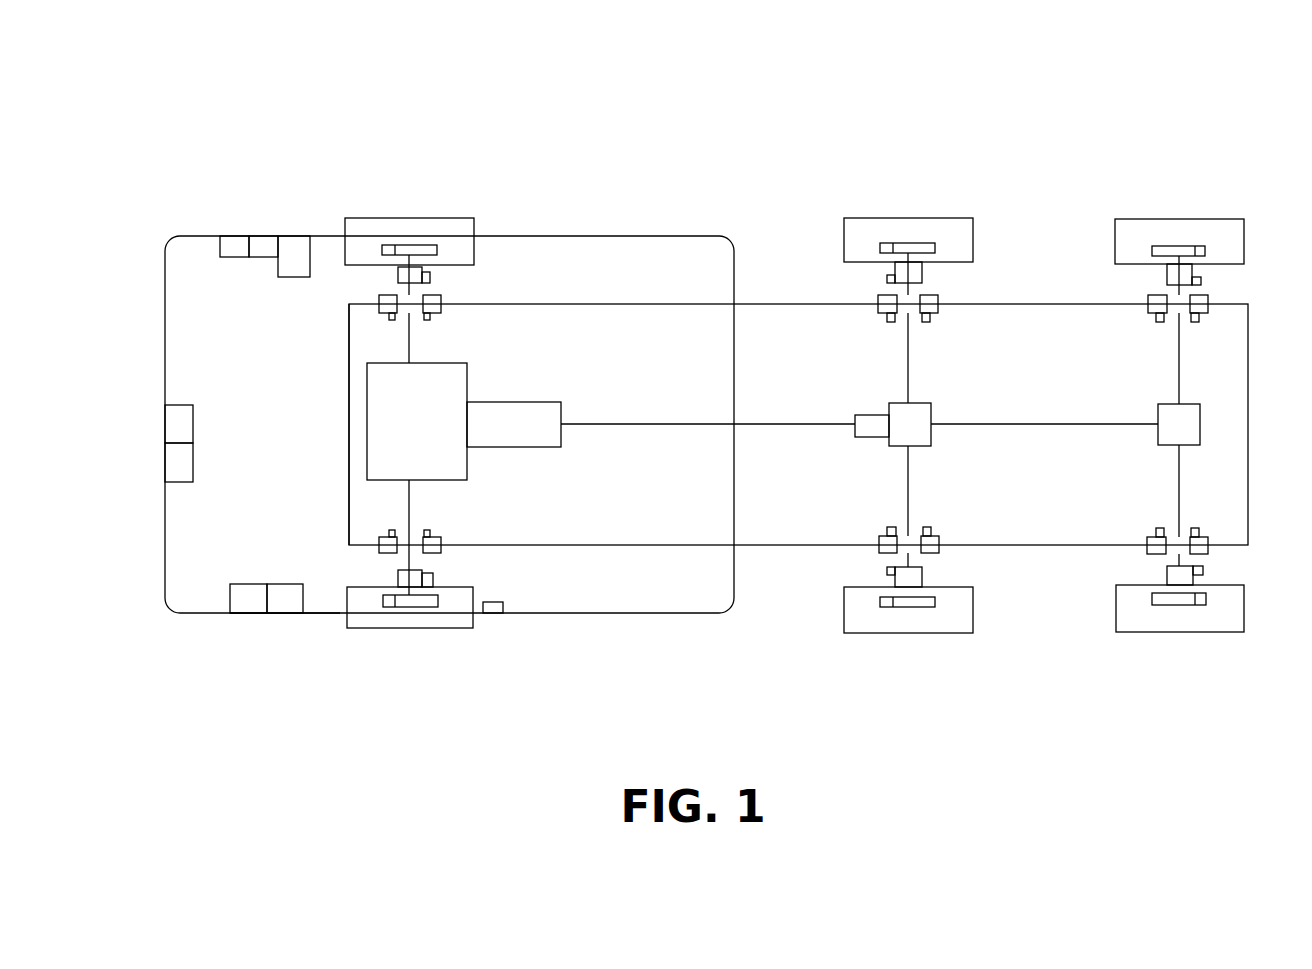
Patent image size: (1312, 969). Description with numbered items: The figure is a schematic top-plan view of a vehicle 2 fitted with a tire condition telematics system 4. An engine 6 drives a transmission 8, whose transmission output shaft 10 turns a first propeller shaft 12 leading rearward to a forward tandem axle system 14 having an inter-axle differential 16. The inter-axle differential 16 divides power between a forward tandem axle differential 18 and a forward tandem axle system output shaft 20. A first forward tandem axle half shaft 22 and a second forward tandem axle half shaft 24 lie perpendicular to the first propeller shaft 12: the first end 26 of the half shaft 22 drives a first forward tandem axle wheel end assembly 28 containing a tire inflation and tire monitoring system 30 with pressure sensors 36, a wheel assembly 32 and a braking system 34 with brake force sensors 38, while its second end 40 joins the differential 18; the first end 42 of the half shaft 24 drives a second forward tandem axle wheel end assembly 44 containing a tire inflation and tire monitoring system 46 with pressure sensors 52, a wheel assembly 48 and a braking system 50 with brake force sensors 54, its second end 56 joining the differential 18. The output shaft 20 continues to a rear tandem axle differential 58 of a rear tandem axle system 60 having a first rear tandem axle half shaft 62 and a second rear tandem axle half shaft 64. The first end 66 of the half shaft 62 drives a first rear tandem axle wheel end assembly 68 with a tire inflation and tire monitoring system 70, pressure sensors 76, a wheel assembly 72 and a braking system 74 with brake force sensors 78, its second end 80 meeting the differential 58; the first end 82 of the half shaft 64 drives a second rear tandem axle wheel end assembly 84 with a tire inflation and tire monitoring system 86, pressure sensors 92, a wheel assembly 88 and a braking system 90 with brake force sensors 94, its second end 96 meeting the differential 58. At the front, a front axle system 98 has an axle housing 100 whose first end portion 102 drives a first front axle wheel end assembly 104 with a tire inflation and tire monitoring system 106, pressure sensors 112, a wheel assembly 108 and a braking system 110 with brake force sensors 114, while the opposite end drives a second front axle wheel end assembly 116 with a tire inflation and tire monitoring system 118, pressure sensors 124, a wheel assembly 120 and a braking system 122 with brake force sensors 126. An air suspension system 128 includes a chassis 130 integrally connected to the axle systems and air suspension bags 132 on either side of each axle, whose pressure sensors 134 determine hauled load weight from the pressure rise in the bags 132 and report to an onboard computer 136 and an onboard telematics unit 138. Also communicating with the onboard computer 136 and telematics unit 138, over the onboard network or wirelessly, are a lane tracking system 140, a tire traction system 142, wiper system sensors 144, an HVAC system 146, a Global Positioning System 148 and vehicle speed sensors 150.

The vehicle 2 is at (567, 742).
The tire condition telematics system 4 is at (278, 727).
The engine 6 is at (417, 421).
The transmission 8 is at (514, 424).
The transmission output shaft 10 is at (587, 424).
The first propeller shaft 12 is at (695, 424).
The forward tandem axle system 14 is at (879, 420).
The inter-axle differential 16 is at (872, 437).
The forward tandem axle differential 18 is at (931, 406).
The forward tandem axle system output shaft 20 is at (995, 424).
The first forward tandem axle half shaft 22 is at (908, 478).
The second forward tandem axle half shaft 24 is at (908, 378).
The first end 26 is at (908, 557).
The first forward tandem axle wheel end assembly 28 is at (928, 651).
The first forward tandem axle tire inflation and tire monitoring system 30 is at (922, 577).
The first forward tandem axle wheel assembly 32 is at (960, 633).
The first forward tandem axle braking system 34 is at (935, 605).
The pressure sensors 36 is at (887, 571).
The brake force sensors 38 is at (886, 607).
The second end 40 is at (908, 462).
The first end 42 is at (912, 290).
The second forward tandem axle wheel end assembly 44 is at (929, 193).
The second forward tandem axle tire inflation and tire monitoring system 46 is at (922, 272).
The second forward tandem axle wheel assembly 48 is at (960, 218).
The second forward tandem axle braking system 50 is at (935, 248).
The pressure sensors 52 is at (887, 280).
The brake force sensors 54 is at (886, 243).
The second end 56 is at (908, 358).
The rear tandem axle differential 58 is at (1200, 420).
The rear tandem axle system 60 is at (1155, 417).
The first rear tandem axle half shaft 62 is at (1179, 478).
The second rear tandem axle half shaft 64 is at (1179, 355).
The first end 66 is at (1179, 556).
The first rear tandem axle wheel end assembly 68 is at (1194, 649).
The first rear tandem axle tire inflation and tire monitoring system 70 is at (1167, 575).
The first rear tandem axle wheel assembly 72 is at (1128, 632).
The first rear tandem axle braking system 74 is at (1170, 605).
The pressure sensors 76 is at (1203, 570).
The brake force sensors 78 is at (1206, 600).
The second end 80 is at (1179, 468).
The first end 82 is at (1178, 292).
The second rear tandem axle wheel end assembly 84 is at (1201, 194).
The second rear tandem axle tire inflation and tire monitoring system 86 is at (1167, 275).
The second rear tandem axle wheel assembly 88 is at (1225, 219).
The second rear tandem axle braking system 90 is at (1158, 246).
The pressure sensors 92 is at (1201, 281).
The brake force sensors 94 is at (1205, 251).
The second end 96 is at (1179, 368).
The front axle system 98 is at (293, 531).
The axle housing 100 is at (404, 558).
The first end portion 102 is at (404, 287).
The first front axle wheel end assembly 104 is at (410, 649).
The first front axle tire inflation and tire monitoring system 106 is at (398, 580).
The first front axle wheel assembly 108 is at (355, 628).
The first front axle braking system 110 is at (437, 607).
The pressure sensors 112 is at (433, 578).
The brake force sensors 114 is at (392, 607).
The second front axle wheel end assembly 116 is at (407, 188).
The second front axle tire inflation and tire monitoring system 118 is at (398, 273).
The second front axle wheel assembly 120 is at (360, 218).
The second front axle braking system 122 is at (430, 248).
The pressure sensors 124 is at (430, 278).
The brake force sensors 126 is at (389, 245).
The air suspension system 128 is at (798, 370).
The chassis 130 is at (607, 304).
The air suspension bags 132 is at (380, 312).
The pressure sensors 134 is at (392, 320).
The onboard computer 136 is at (248, 613).
The onboard telematics unit 138 is at (283, 613).
The lane tracking system 140 is at (175, 422).
The tire traction system 142 is at (232, 243).
The wiper system sensors 144 is at (263, 243).
The HVAC system 146 is at (292, 255).
The Global Positioning System 148 is at (175, 465).
The vehicle speed sensors 150 is at (495, 613).